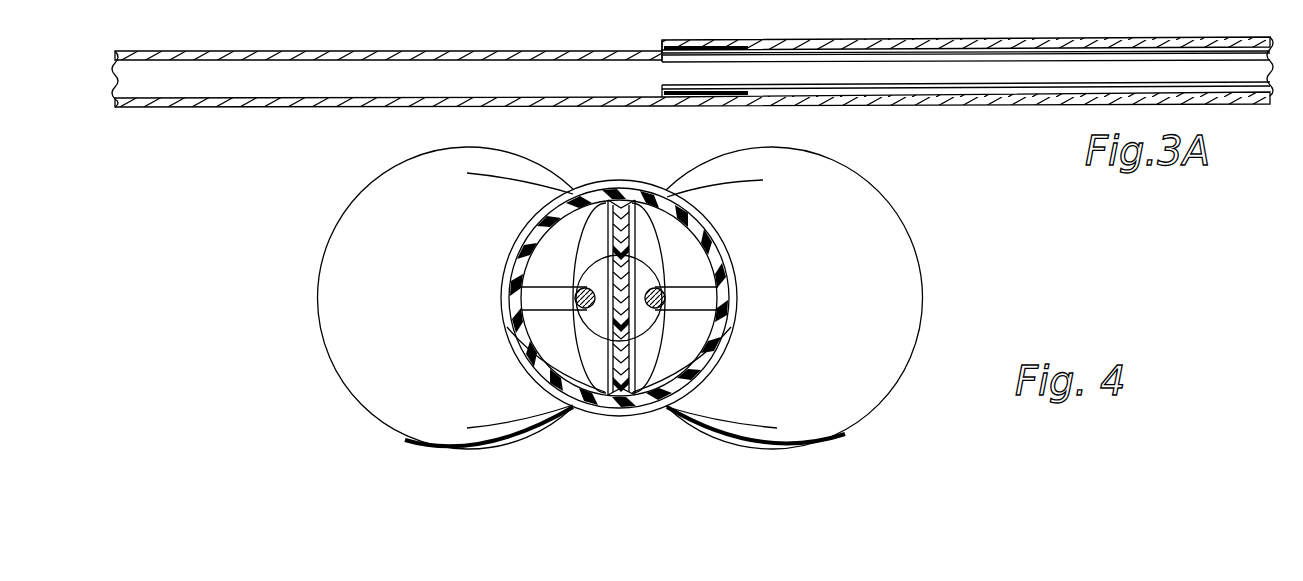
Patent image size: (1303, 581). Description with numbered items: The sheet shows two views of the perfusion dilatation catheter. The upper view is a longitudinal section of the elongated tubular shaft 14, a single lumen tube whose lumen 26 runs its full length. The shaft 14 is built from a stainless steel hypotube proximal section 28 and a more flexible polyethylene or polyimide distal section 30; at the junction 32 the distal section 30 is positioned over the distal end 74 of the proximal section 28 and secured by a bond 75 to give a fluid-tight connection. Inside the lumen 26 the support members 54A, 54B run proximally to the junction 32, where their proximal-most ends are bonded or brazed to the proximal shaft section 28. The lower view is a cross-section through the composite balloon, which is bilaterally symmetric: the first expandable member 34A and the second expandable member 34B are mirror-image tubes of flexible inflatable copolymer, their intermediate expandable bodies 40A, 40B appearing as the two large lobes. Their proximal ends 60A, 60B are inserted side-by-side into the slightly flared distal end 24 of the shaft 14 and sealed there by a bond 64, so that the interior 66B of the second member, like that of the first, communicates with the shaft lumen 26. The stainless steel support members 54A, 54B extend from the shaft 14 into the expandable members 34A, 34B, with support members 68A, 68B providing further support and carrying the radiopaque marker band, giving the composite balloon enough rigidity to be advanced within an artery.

In FIG. 3A, the elongated tubular shaft 14 is at (691, 82).
In FIG. 3A, the proximal section 28 is at (333, 24).
In FIG. 3A, the lumen 26 is at (563, 80).
In FIG. 3A, the intermediate expandable body 40B is at (687, 0).
In FIG. 4, the intermediate expandable body 40B is at (923, 283).
In FIG. 4, the intermediate expandable body 40A is at (317, 290).
In FIG. 3A, the support member 68A is at (787, 57).
In FIG. 3A, the support member 68B is at (803, 97).
In FIG. 3A, the bond 75 is at (705, 47).
In FIG. 3A, the junction 32 is at (653, 46).
In FIG. 3A, the distal end of proximal shaft section 74 is at (645, 80).
In FIG. 3A, the second expandable member 34B is at (844, 2).
In FIG. 4, the second expandable member 34B is at (848, 430).
In FIG. 4, the first expandable member 34A is at (407, 443).
In FIG. 3A, the interior 66B is at (968, 0).
In FIG. 3A, the distal section 30 is at (976, 108).
In FIG. 4, the distal end 24 is at (578, 403).
In FIG. 4, the proximal end 60A is at (583, 198).
In FIG. 4, the proximal end 60B is at (657, 200).
In FIG. 4, the bond 64 is at (622, 196).
In FIG. 4, the support member 54A is at (547, 305).
In FIG. 4, the support member 54B is at (690, 305).